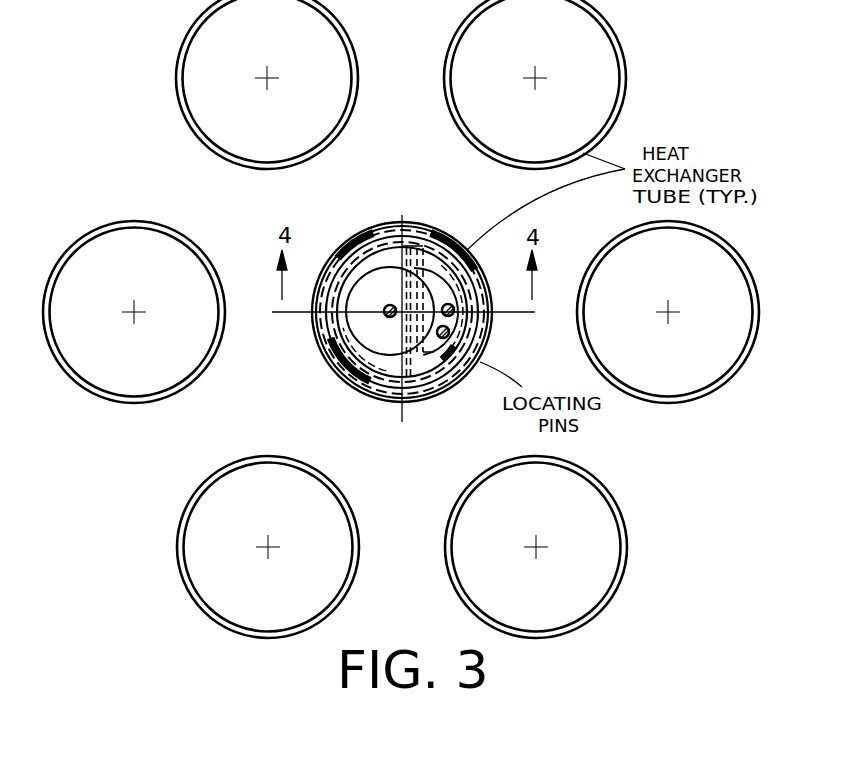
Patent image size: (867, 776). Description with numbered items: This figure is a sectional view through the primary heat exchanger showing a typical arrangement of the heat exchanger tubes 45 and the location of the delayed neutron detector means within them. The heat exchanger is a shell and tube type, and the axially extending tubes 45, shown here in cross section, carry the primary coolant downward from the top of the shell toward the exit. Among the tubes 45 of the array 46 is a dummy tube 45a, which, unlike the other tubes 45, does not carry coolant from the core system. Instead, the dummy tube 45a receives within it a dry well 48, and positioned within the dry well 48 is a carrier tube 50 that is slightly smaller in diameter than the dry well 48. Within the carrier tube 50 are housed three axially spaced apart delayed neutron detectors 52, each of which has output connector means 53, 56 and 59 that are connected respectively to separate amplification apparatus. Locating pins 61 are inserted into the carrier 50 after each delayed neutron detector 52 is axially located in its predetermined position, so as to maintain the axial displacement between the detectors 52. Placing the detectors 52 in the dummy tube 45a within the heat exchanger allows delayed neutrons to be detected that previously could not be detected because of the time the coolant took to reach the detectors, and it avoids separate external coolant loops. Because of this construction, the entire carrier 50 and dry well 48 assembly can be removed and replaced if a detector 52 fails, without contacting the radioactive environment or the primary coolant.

The heat exchanger tube 45 is at (327, 478).
The dummy tube 45a is at (345, 240).
The array of heat exchanger tubes 46 is at (127, 171).
The dry well 48 is at (378, 225).
The carrier tube 50 is at (467, 250).
The delayed neutron detector 52 is at (370, 395).
The output connector means 53 is at (386, 306).
The output connector means 56 is at (455, 302).
The output connector means 59 is at (477, 342).
The locating pin 61 is at (443, 395).